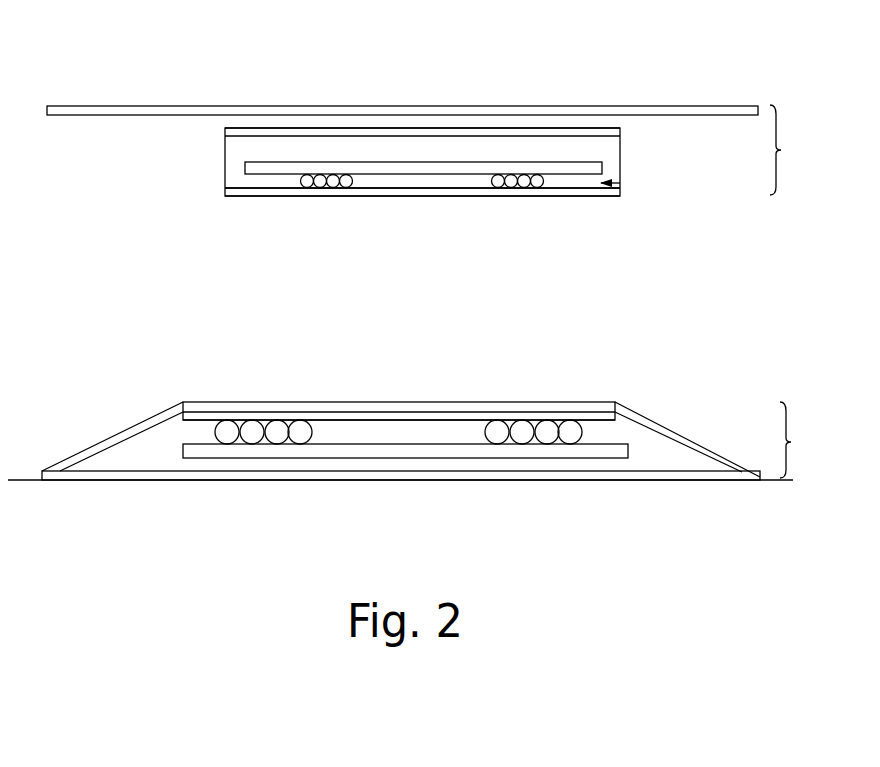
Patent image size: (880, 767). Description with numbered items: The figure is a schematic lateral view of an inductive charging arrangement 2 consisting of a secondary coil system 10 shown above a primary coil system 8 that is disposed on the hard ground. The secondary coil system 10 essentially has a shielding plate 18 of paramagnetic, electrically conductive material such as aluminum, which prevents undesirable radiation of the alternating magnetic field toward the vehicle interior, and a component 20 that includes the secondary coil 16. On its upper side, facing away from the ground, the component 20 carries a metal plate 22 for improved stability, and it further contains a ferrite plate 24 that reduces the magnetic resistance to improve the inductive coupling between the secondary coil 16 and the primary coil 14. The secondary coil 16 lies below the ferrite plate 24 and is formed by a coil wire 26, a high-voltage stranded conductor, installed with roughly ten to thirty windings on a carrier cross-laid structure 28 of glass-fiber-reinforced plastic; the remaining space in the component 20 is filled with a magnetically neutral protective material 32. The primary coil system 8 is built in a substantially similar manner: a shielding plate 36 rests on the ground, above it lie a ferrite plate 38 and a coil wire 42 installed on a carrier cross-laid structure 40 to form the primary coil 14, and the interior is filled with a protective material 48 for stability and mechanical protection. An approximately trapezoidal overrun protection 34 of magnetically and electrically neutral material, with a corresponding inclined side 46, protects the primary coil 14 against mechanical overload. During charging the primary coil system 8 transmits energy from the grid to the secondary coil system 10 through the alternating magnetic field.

The bearing assembly 2 is at (116, 344).
The primary coil system 8 is at (811, 456).
The secondary coil system 10 is at (813, 164).
The primary coil 14 is at (606, 434).
The secondary coil 16 is at (620, 183).
The shielding plate 18 is at (570, 106).
The component 20 is at (621, 152).
The metal plate 22 is at (404, 128).
The ferrite plate 24 is at (253, 172).
The coil wire 26 is at (307, 187).
The carrier cross-laid structure 28 is at (226, 192).
The protective material 32 is at (458, 183).
The overrun protection 34 is at (107, 431).
The shielding plate 36 is at (133, 478).
The ferrite plate 38 is at (300, 450).
The carrier cross-laid structure 40 is at (413, 414).
The coil wire 42 is at (570, 436).
The inclined side wall 46 is at (672, 455).
The protective material 48 is at (394, 421).